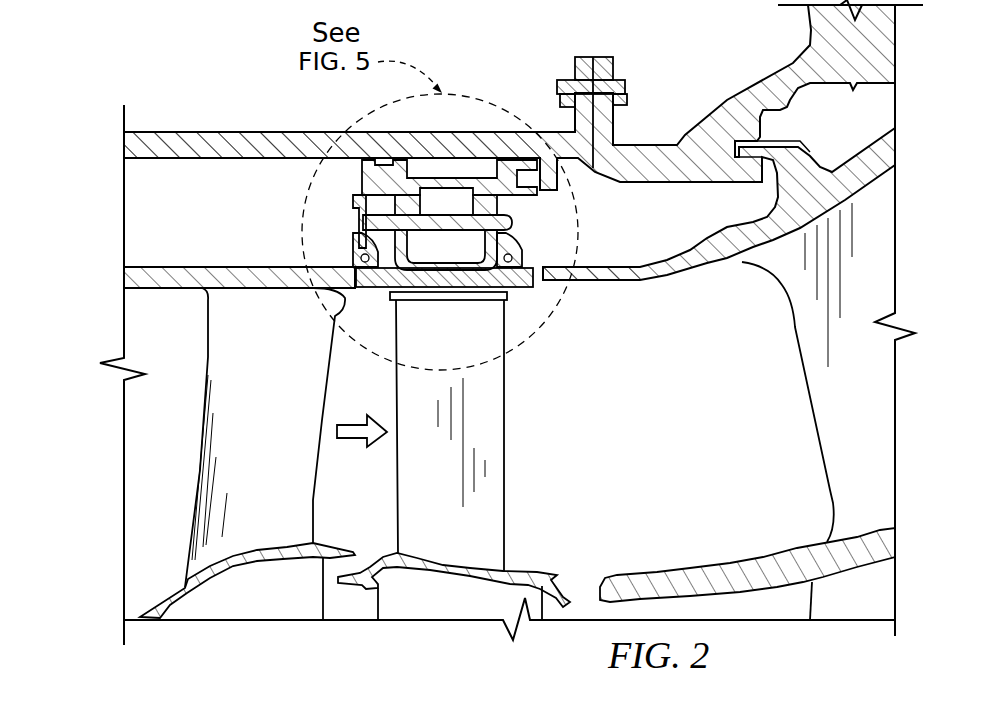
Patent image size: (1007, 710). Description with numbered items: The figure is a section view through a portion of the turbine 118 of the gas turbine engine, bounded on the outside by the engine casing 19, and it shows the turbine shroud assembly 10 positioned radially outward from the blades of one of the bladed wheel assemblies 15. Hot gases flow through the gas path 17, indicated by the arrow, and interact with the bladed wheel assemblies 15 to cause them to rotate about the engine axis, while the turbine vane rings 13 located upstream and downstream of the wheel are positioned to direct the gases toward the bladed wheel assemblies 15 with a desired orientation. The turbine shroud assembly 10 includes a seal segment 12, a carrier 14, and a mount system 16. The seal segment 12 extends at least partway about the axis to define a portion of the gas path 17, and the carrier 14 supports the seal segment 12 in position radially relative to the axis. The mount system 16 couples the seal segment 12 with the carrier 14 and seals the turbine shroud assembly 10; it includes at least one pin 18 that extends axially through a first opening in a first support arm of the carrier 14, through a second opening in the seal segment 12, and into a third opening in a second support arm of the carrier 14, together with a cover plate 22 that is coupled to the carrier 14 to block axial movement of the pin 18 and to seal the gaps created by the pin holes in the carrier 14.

The turbine section 118 is at (118, 74).
The outer casing wall 19 is at (243, 128).
The turbine shroud assembly 10 is at (509, 145).
The mount system 16 is at (318, 178).
The pin 18 is at (387, 208).
The cover plate 22 is at (350, 220).
The seal segment 12 is at (360, 300).
The carrier 14 is at (530, 216).
The bladed wheel assembly 15 is at (518, 372).
The turbine vane ring 13 is at (190, 350).
The gas path 17 is at (371, 401).